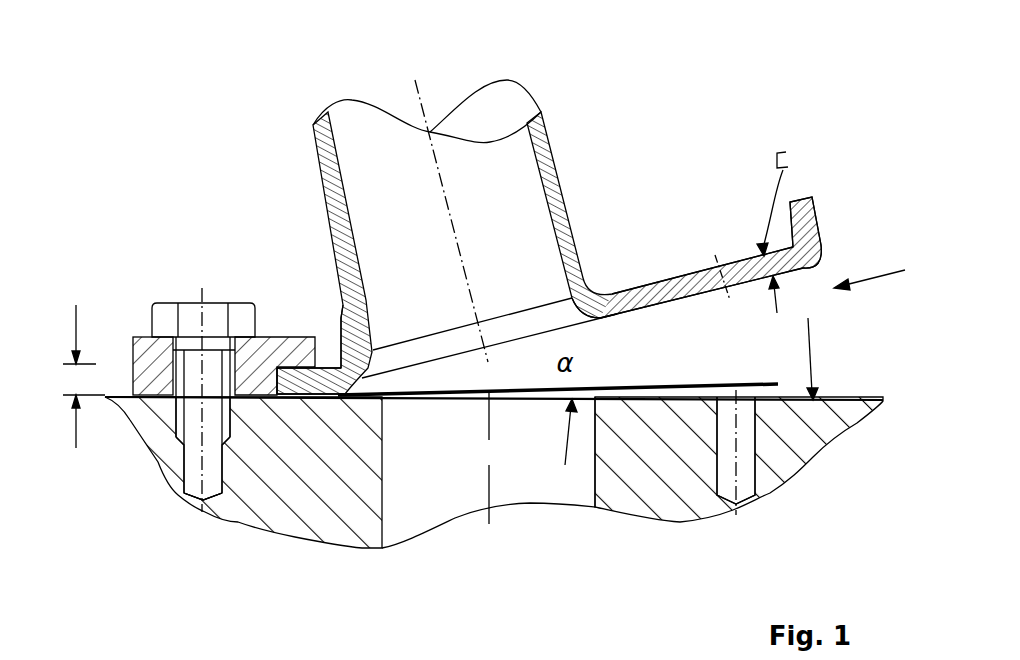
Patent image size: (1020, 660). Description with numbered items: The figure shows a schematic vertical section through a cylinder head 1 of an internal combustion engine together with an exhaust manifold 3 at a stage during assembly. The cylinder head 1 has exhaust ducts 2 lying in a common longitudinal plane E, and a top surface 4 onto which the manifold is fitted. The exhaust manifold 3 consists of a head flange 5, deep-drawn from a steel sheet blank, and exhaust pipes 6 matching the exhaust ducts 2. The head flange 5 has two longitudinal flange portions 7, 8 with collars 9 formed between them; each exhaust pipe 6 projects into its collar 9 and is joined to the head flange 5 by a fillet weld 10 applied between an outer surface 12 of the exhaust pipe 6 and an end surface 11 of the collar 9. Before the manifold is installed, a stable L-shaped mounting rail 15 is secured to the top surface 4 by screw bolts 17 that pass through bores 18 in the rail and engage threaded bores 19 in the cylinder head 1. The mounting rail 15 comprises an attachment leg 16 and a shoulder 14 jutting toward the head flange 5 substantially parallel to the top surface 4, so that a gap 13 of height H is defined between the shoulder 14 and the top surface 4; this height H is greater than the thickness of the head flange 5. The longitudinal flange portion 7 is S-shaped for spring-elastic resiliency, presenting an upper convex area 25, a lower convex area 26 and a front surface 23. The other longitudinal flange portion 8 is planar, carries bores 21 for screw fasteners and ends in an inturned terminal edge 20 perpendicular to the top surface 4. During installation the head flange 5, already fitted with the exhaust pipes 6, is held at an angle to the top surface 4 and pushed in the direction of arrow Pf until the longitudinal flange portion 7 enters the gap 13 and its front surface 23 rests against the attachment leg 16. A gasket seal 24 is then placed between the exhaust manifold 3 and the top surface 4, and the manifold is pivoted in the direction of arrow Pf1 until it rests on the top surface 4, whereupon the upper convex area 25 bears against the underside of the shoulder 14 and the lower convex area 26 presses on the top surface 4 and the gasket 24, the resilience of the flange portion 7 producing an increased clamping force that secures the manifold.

The cylinder head 1 is at (262, 498).
The exhaust ducts 2 is at (442, 498).
The exhaust manifold 3 is at (617, 137).
The top surface 4 is at (621, 400).
The head flange 5 is at (655, 284).
The exhaust pipes 6 is at (527, 71).
The longitudinal flange portion 7 is at (310, 388).
The longitudinal flange portion 8 is at (680, 300).
The collar 9 is at (578, 240).
The fillet weld 10 is at (350, 307).
The end surface 11 is at (370, 320).
The outer surface 12 is at (555, 133).
The gap 13 is at (255, 362).
The shoulder 14 is at (300, 370).
The mounting rail 15 is at (132, 334).
The attachment leg 16 is at (145, 398).
The screw bolts 17 is at (187, 299).
The bores 18 is at (175, 368).
The threaded bores 19 is at (197, 468).
The inturned terminal edge 20 is at (813, 197).
The bores 21 is at (735, 270).
The front surface 23 is at (208, 502).
The gasket seal 24 is at (507, 390).
The upper convex area 25 is at (285, 385).
The lower convex area 26 is at (338, 399).
The longitudinal plane E is at (509, 483).
The arrow Pf is at (875, 270).
The arrow Pf1 is at (810, 347).
The height H is at (84, 376).